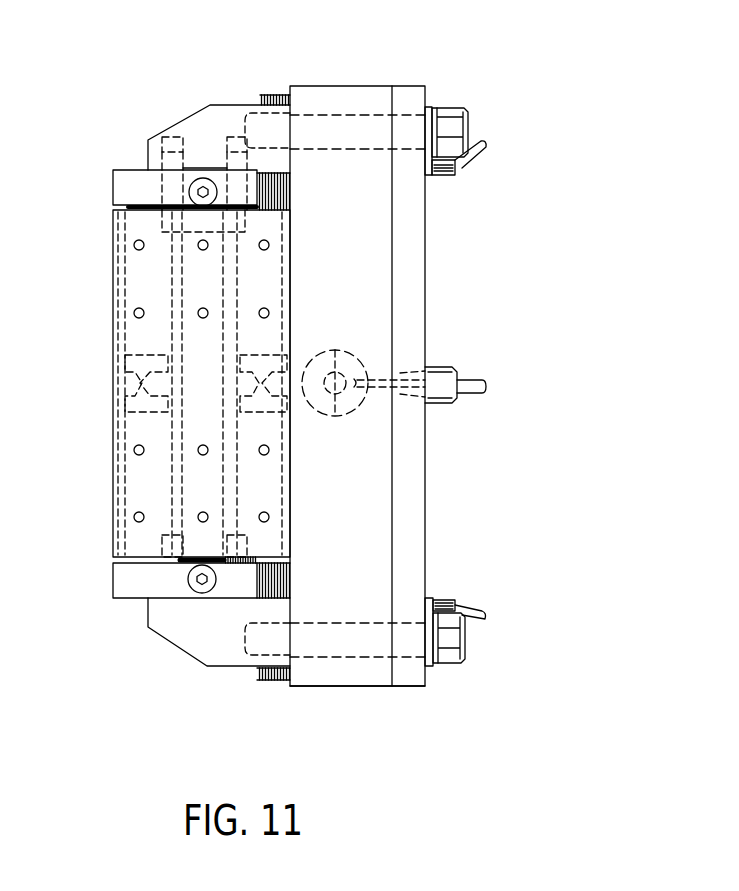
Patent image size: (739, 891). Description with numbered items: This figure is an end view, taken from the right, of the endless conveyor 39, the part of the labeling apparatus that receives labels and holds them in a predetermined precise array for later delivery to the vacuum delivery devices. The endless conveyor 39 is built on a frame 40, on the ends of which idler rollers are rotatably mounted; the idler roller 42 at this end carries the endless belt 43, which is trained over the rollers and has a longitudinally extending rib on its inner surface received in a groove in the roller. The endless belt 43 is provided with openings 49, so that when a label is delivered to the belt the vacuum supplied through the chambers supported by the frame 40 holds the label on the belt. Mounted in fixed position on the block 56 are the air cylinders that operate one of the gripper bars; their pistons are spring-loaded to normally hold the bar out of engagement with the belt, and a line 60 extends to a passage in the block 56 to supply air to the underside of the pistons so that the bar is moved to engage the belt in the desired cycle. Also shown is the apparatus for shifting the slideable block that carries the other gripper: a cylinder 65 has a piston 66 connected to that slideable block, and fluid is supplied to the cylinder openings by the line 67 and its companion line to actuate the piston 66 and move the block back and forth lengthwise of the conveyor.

The endless conveyor 39 is at (382, 79).
The frame 40 is at (410, 242).
The idler roller 42 is at (147, 527).
The endless belt 43 is at (135, 345).
The openings 49 is at (134, 452).
The block 56 is at (356, 672).
The line 60 is at (480, 155).
The cylinder 65 is at (335, 350).
The piston 66 is at (335, 416).
The line 67 is at (472, 382).